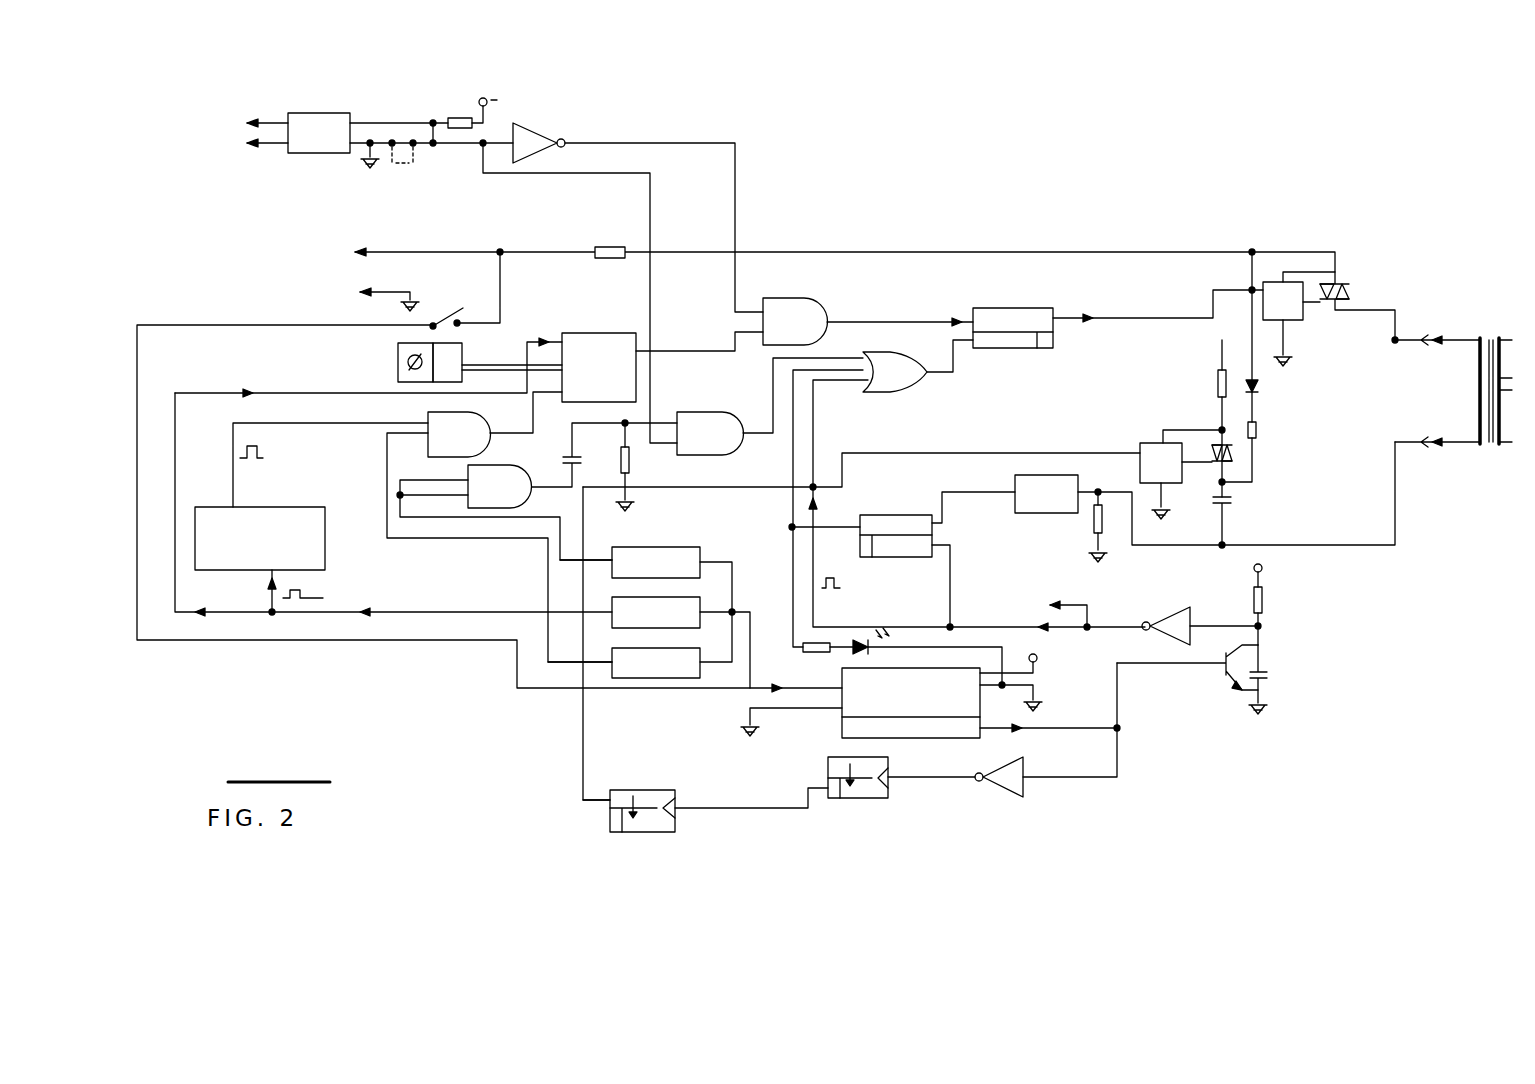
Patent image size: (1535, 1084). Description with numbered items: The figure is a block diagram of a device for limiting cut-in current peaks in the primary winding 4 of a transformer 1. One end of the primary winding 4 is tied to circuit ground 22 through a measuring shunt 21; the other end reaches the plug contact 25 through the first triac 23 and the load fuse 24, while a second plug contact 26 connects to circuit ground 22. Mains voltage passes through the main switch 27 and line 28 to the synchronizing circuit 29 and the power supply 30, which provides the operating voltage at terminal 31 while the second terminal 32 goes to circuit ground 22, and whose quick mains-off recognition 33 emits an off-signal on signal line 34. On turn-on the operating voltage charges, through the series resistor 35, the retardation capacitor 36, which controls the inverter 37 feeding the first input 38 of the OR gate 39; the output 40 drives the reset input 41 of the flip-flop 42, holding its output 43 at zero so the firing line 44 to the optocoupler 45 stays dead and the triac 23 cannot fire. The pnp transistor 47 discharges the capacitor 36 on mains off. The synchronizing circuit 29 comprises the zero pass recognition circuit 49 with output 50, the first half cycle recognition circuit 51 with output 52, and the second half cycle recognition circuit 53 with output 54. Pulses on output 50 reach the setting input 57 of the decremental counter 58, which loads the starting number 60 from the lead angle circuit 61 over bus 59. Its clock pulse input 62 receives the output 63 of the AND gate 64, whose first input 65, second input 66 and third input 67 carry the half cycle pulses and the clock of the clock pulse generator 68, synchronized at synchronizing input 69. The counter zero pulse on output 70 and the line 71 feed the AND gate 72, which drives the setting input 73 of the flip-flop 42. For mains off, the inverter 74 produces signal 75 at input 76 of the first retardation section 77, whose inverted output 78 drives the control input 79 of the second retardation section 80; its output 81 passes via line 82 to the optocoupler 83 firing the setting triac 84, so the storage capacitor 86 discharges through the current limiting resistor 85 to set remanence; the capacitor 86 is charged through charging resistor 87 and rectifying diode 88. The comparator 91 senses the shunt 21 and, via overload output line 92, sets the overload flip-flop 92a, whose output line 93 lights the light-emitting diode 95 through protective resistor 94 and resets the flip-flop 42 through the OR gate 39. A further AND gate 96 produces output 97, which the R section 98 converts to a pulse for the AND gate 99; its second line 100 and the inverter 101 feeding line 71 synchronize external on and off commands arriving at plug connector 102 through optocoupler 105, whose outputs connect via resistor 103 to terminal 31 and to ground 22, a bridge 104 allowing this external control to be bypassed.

The transformer 1 is at (1480, 456).
The primary winding 4 is at (1480, 386).
The measuring shunt 21 is at (1096, 530).
The circuit ground 22 is at (364, 164).
The first triac 23 is at (1348, 283).
The load fuse 24 is at (607, 245).
The plug contact 25 is at (356, 252).
The ground line 26 is at (356, 291).
The main switch 27 is at (445, 312).
The line 28 is at (465, 645).
The synchronizing circuit 29 is at (702, 538).
The power supply 30 is at (911, 703).
The terminal 31 is at (488, 100).
The second terminal 32 is at (1040, 684).
The quick mains-off recognition circuit 33 is at (840, 726).
The signal line 34 is at (1122, 742).
The series resistor 35 is at (1263, 600).
The retardation capacitor 36 is at (1268, 672).
The inverter 37 is at (1190, 610).
The first input 38 is at (1000, 626).
The OR gate 39 is at (895, 372).
The output 40 is at (930, 374).
The reset input 41 is at (964, 354).
The flip-flop 42 is at (1022, 344).
The output 43 is at (1056, 318).
The firing line 44 is at (1166, 318).
The optocoupler 45 is at (1282, 284).
The pnp transistor 47 is at (1224, 668).
The zero pass recognition circuit 49 is at (656, 612).
The output 50 is at (382, 607).
The first half cycle recognition circuit 51 is at (656, 562).
The output 52 is at (610, 558).
The second half cycle recognition circuit 53 is at (656, 663).
The output 54 is at (596, 664).
The setting input 57 is at (547, 342).
The decremental counter 58 is at (599, 367).
The bus 59 is at (517, 368).
The starting number 60 is at (432, 345).
The lead angle circuit 61 is at (398, 364).
The clock pulse input 62 is at (559, 396).
The output 63 is at (523, 432).
The AND gate 64 is at (459, 434).
The first input 65 is at (410, 536).
The second input 66 is at (480, 518).
The third input 67 is at (284, 424).
The clock pulse generator 68 is at (260, 538).
The synchronizing input 69 is at (266, 580).
The output 70 is at (702, 355).
The line 71 is at (740, 177).
The AND gate 72 is at (795, 321).
The setting input 73 is at (917, 322).
The inverter 74 is at (1012, 798).
The signal 75 is at (898, 786).
The input 76 is at (868, 808).
The first retardation section 77 is at (818, 806).
The inverted output 78 is at (738, 808).
The control input 79 is at (686, 808).
The second retardation section 80 is at (620, 790).
The output 81 is at (602, 806).
The line 82 is at (582, 721).
The optocoupler 83 is at (1143, 448).
The setting triac 84 is at (1206, 430).
The current limiting resistor 85 is at (1216, 384).
The storage capacitor 86 is at (1232, 500).
The charging resistor 87 is at (1260, 431).
The rectifying diode 88 is at (1264, 382).
The comparator 91 is at (1205, 493).
The overload output line 92 is at (952, 498).
The overload flip-flop 92a is at (914, 516).
The output line 93 is at (792, 573).
The protective resistor 94 is at (816, 640).
The light-emitting diode 95 is at (866, 638).
The AND gate 96 is at (500, 486).
The output 97 is at (549, 480).
The R section 98 is at (602, 462).
The AND gate 99 is at (770, 406).
The second line 100 is at (652, 206).
The inverter 101 is at (536, 133).
The plug connector 102 is at (244, 132).
The resistor 103 is at (463, 116).
The bridge 104 is at (406, 168).
The optocoupler 105 is at (319, 133).